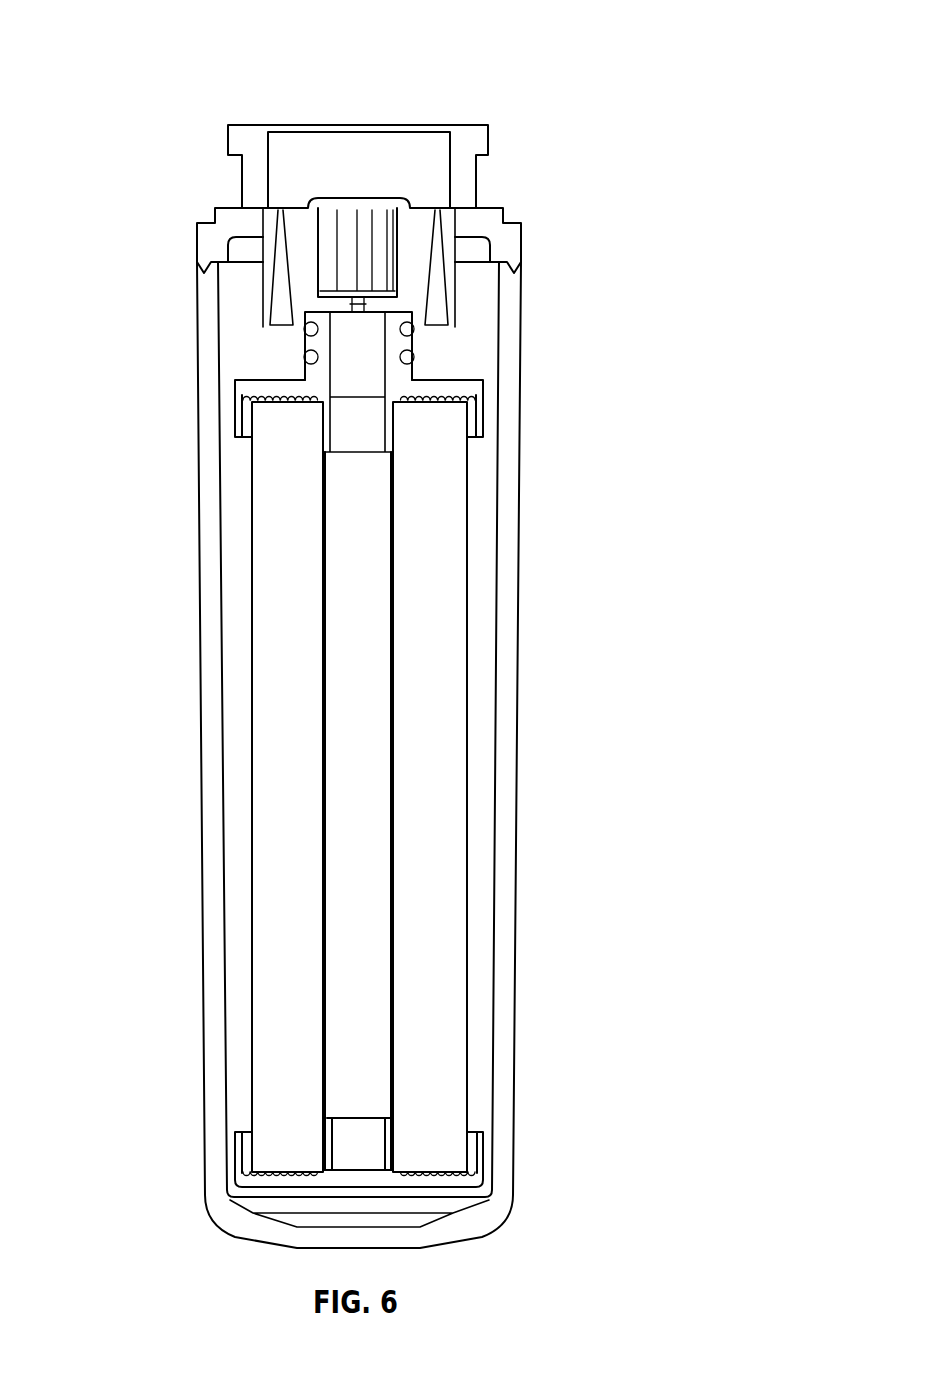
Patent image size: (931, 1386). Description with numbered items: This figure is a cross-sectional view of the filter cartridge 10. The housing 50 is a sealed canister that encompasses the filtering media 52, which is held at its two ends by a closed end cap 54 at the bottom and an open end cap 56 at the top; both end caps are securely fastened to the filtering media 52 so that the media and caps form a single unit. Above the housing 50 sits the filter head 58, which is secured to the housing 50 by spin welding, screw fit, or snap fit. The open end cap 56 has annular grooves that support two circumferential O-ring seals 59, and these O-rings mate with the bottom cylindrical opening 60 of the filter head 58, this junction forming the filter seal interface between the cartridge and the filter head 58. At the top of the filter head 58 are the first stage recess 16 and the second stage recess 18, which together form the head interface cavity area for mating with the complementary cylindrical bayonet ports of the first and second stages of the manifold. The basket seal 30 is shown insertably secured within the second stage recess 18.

The filter cartridge 10 is at (686, 301).
The first stage recess 16 is at (288, 163).
The second stage recess 18 is at (327, 247).
The basket seal 30 is at (377, 228).
The housing 50 is at (515, 905).
The filtering media 52 is at (445, 717).
The closed end cap 54 is at (365, 1175).
The open end cap 56 is at (395, 372).
The filter head 58 is at (460, 215).
The O-ring seals 59 is at (313, 360).
The bottom cylindrical opening 60 is at (417, 342).